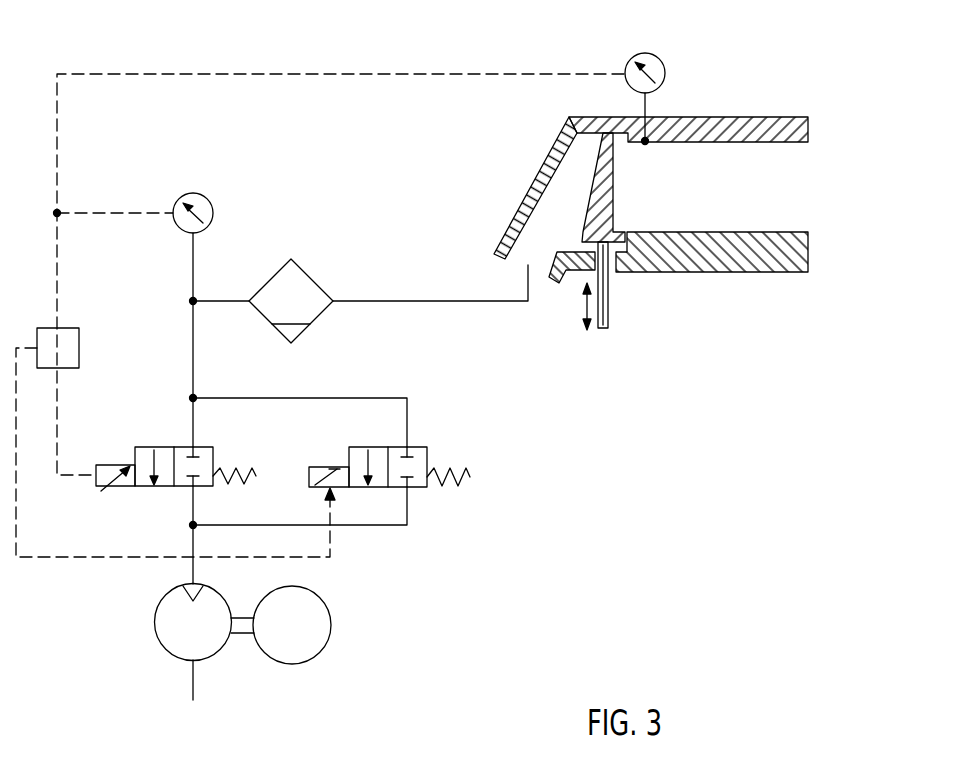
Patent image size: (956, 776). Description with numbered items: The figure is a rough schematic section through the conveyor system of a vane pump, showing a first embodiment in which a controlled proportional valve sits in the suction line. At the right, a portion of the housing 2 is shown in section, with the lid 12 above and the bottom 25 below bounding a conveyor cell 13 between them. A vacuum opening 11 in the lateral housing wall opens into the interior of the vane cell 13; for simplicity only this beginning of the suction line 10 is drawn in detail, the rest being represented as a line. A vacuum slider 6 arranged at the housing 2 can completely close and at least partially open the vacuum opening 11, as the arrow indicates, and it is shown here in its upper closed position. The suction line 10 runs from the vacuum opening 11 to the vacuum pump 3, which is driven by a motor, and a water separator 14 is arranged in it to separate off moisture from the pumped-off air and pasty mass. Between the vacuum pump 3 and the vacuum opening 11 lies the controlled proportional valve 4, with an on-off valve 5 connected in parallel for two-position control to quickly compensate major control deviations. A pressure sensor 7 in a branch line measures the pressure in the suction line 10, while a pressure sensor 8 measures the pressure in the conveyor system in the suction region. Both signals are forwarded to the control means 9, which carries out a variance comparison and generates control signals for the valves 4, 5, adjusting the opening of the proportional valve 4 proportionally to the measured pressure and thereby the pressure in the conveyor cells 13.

The housing 2 is at (712, 251).
The vacuum pump 3 is at (331, 612).
The controlled proportional valve 4 is at (214, 447).
The on-off valve 5 is at (428, 447).
The vacuum slider 6 is at (614, 188).
The pressure sensor 7 is at (208, 197).
The pressure sensor 8 is at (666, 62).
The control means 9 is at (80, 347).
The suction line 10 is at (498, 302).
The vacuum opening 11 is at (617, 112).
The lid 12 is at (793, 117).
The conveyor cells 13 is at (735, 172).
The water separator 14 is at (310, 276).
The bottom 25 is at (793, 231).